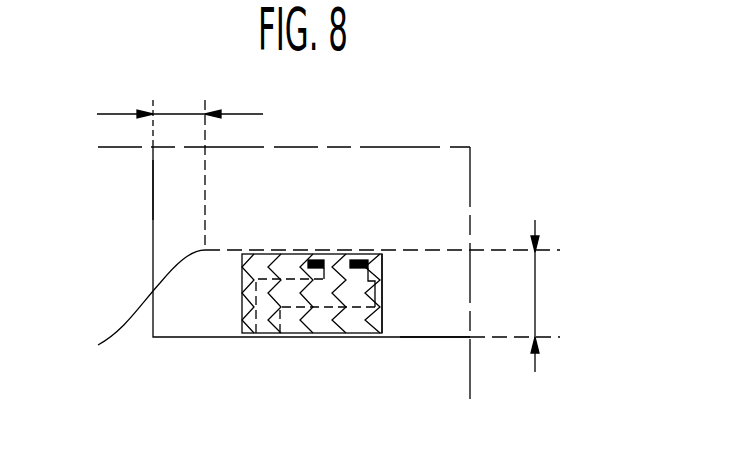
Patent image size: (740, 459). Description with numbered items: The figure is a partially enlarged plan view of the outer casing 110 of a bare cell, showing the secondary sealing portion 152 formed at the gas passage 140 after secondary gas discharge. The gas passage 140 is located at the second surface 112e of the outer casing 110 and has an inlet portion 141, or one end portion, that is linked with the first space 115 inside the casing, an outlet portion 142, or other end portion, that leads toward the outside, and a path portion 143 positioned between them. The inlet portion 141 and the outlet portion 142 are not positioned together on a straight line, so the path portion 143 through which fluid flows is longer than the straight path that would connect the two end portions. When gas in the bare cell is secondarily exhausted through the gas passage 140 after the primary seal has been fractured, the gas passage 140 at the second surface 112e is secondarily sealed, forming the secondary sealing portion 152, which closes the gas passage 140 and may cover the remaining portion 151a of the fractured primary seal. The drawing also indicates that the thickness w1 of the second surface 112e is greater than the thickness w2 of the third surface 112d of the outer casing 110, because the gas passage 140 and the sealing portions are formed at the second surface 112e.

The outer casing 110 is at (152, 219).
The third surface 112d is at (162, 187).
The second surface 112e is at (443, 327).
The first space 115 is at (135, 306).
The gas passage 140 is at (306, 258).
The inlet portion 141 is at (337, 254).
The outlet portion 142 is at (270, 317).
The path portion 143 is at (323, 298).
The remaining portion of the primary sealing portion 151a is at (362, 268).
The secondary sealing portion 152 is at (383, 303).
The thickness of the second surface w1 is at (548, 296).
The thickness of the third surface w2 is at (180, 103).